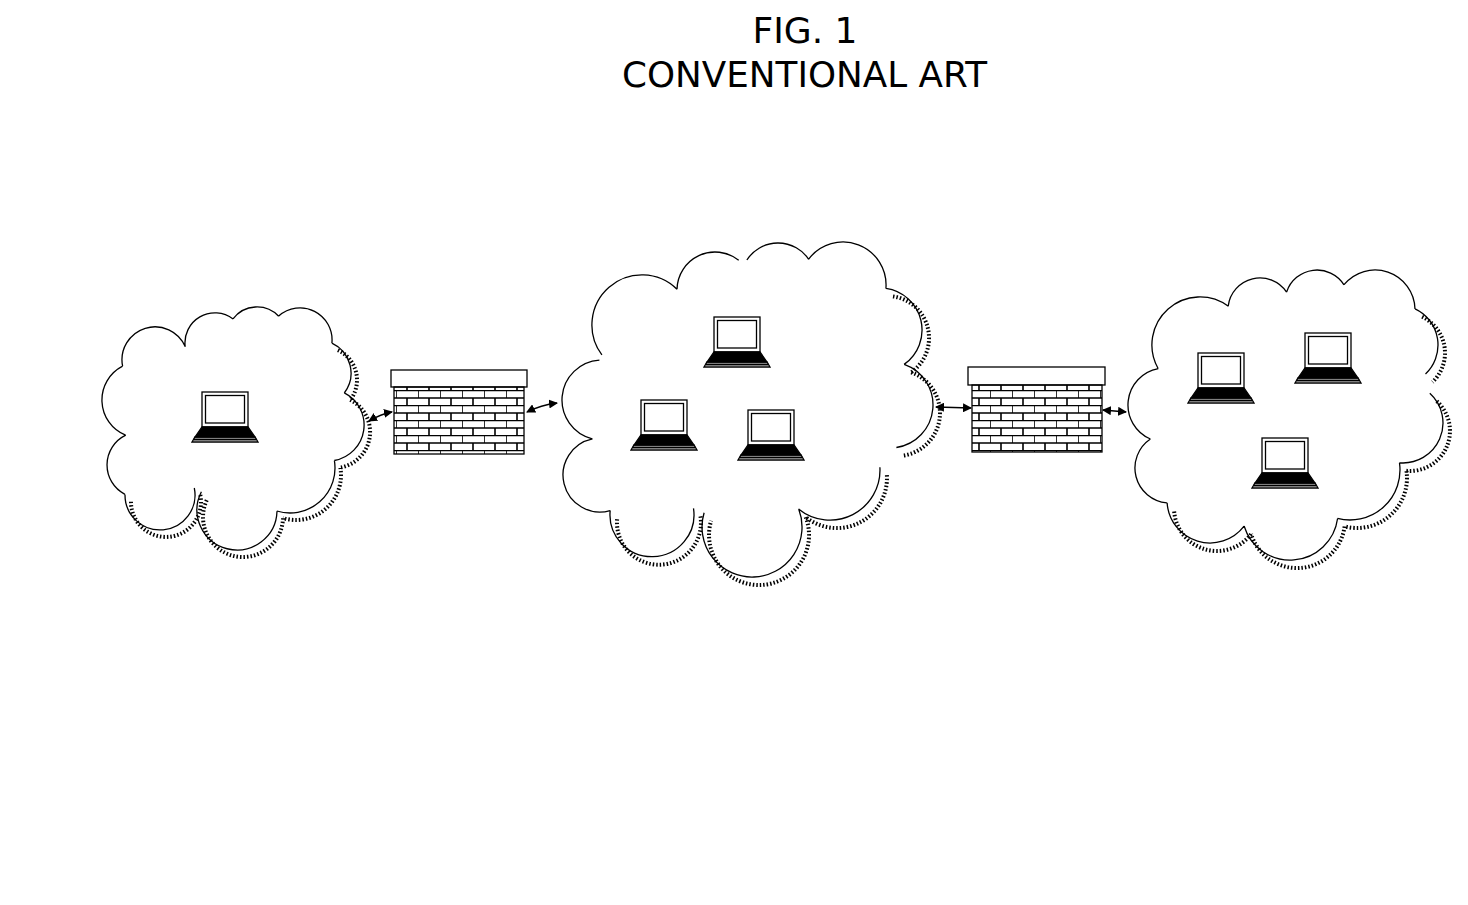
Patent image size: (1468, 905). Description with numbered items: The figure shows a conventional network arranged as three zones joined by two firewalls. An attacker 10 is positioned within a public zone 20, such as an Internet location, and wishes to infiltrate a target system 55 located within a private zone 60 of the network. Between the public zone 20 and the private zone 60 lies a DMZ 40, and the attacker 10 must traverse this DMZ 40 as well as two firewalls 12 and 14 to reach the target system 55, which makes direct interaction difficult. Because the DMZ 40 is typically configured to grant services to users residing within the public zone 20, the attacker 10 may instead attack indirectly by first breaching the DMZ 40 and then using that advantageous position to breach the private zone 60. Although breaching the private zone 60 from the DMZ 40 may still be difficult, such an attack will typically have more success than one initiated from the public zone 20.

The attacker 10 is at (248, 408).
The firewall 12 is at (458, 369).
The firewall 14 is at (1038, 367).
The public zone 20 is at (231, 321).
The DMZ 40 is at (745, 262).
The target system 55 is at (1351, 347).
The private zone 60 is at (1287, 290).